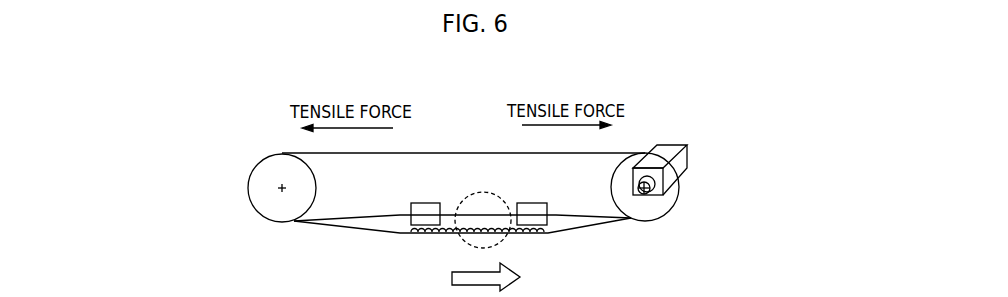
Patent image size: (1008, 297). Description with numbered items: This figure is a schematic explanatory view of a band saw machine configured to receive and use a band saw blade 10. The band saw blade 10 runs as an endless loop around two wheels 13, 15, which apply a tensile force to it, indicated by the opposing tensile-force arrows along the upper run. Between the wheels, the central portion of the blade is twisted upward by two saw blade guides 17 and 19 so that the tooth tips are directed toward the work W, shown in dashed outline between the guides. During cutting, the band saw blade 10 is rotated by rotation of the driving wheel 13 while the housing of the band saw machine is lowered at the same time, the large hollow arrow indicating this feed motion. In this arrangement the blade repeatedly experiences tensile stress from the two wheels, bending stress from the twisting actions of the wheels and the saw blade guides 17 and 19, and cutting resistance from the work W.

The band saw blade 10 is at (455, 153).
The driving wheel 13 is at (668, 198).
The wheel 15 is at (248, 188).
The saw blade guide 17 is at (532, 203).
The saw blade guide 19 is at (427, 203).
The workpiece W is at (487, 192).